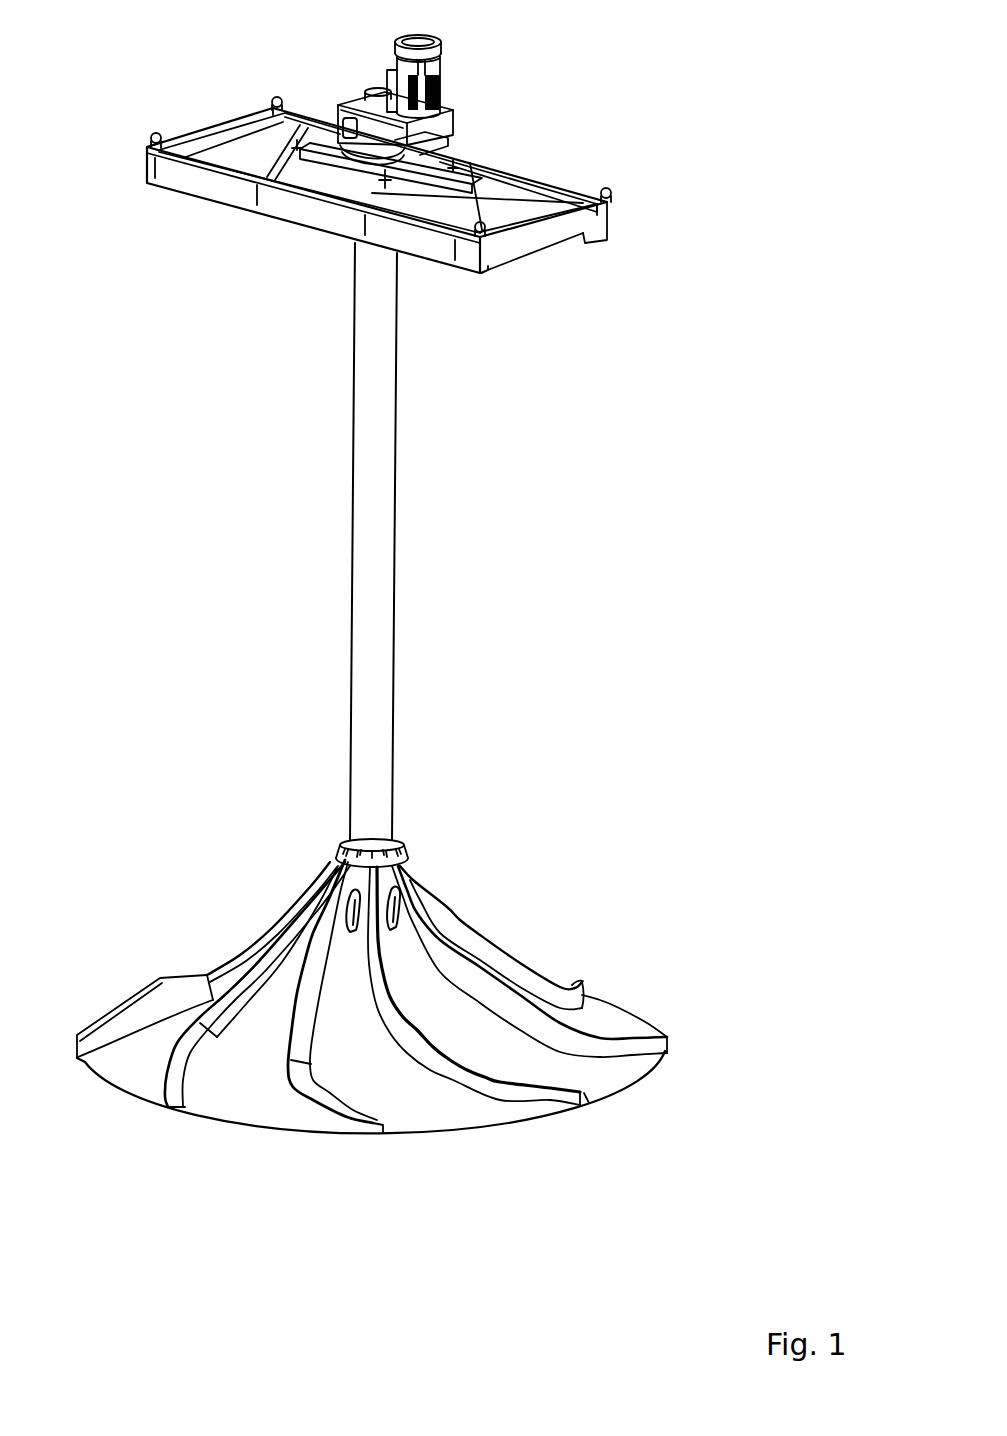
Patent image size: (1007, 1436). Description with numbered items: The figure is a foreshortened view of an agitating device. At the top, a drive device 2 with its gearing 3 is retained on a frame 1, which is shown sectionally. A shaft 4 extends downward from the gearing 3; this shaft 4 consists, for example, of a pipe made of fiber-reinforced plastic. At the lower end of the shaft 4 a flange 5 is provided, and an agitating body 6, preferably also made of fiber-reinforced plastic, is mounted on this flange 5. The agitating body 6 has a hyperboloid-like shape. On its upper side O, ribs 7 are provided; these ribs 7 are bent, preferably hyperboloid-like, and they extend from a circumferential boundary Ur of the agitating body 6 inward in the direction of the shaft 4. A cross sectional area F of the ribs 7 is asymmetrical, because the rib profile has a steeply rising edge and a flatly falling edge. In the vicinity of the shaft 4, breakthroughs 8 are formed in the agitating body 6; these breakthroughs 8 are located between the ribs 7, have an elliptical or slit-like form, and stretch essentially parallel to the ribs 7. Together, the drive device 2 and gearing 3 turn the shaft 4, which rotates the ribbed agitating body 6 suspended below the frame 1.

The frame 1 is at (570, 193).
The drive device 2 is at (440, 72).
The gearing 3 is at (447, 127).
The shaft 4 is at (383, 520).
The flange 5 is at (400, 838).
The agitating body 6 is at (418, 1070).
The ribs 7 is at (290, 1123).
The breakthroughs 8 is at (417, 895).
The circumferential boundary Ur is at (637, 1088).
The cross sectional area F is at (380, 1132).
The upper side O is at (407, 1107).